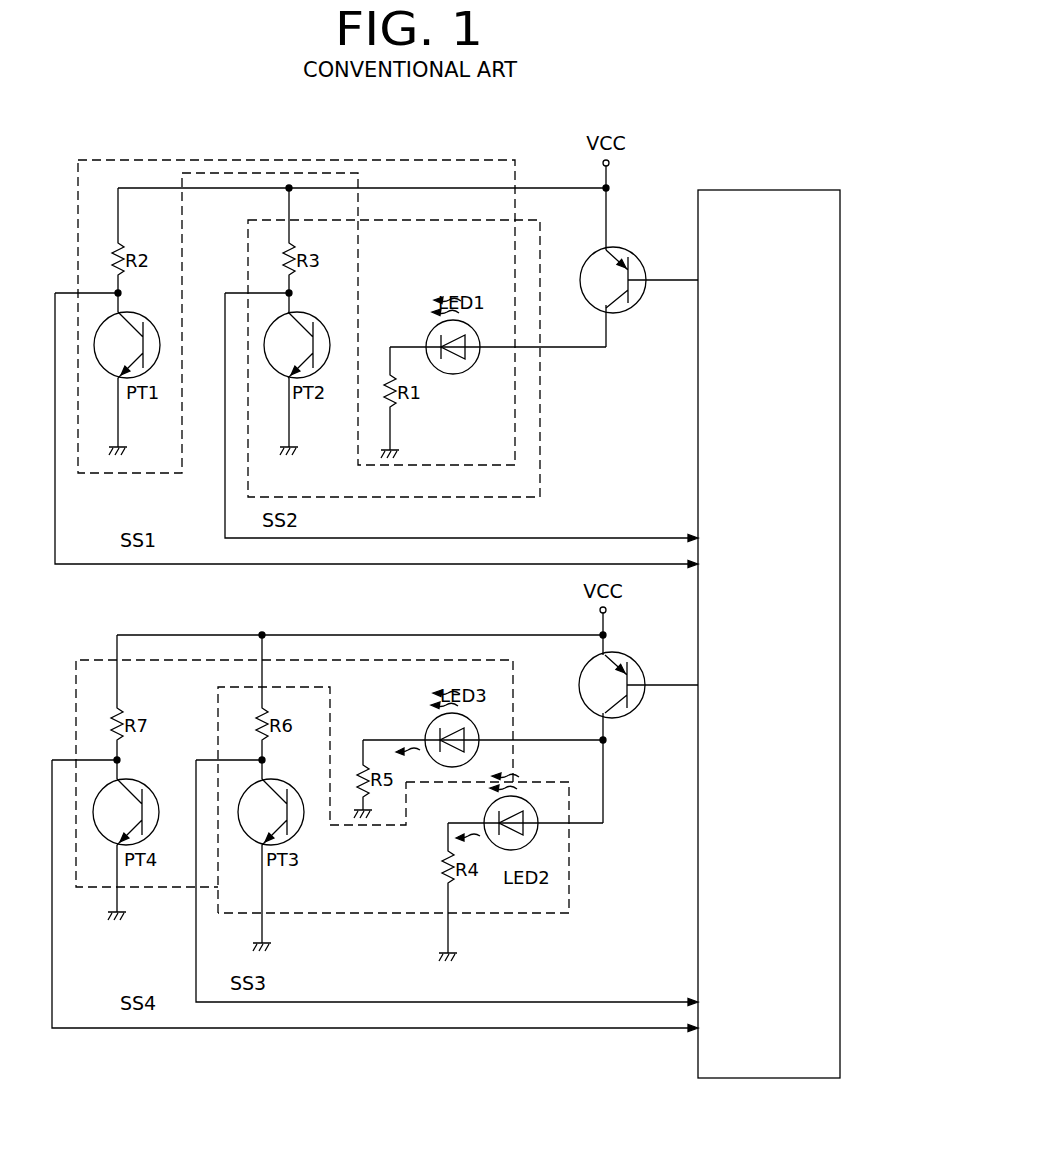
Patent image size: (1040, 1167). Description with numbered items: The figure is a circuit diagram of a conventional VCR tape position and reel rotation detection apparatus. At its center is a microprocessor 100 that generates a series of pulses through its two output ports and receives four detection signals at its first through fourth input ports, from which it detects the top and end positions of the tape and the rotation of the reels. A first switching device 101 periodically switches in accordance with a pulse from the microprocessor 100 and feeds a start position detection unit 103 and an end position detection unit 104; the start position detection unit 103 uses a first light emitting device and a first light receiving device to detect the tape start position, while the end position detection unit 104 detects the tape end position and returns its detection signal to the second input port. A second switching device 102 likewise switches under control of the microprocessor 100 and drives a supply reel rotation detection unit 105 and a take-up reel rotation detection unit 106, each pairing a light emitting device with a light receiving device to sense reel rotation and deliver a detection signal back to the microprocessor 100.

The microprocessor 100 is at (791, 190).
The first switching device 101 is at (636, 263).
The second switching device 102 is at (636, 708).
The start position detection unit 103 is at (386, 160).
The end position detection unit 104 is at (540, 460).
The supply reel rotation detection unit 105 is at (569, 890).
The take-up reel rotation detection unit 106 is at (94, 660).